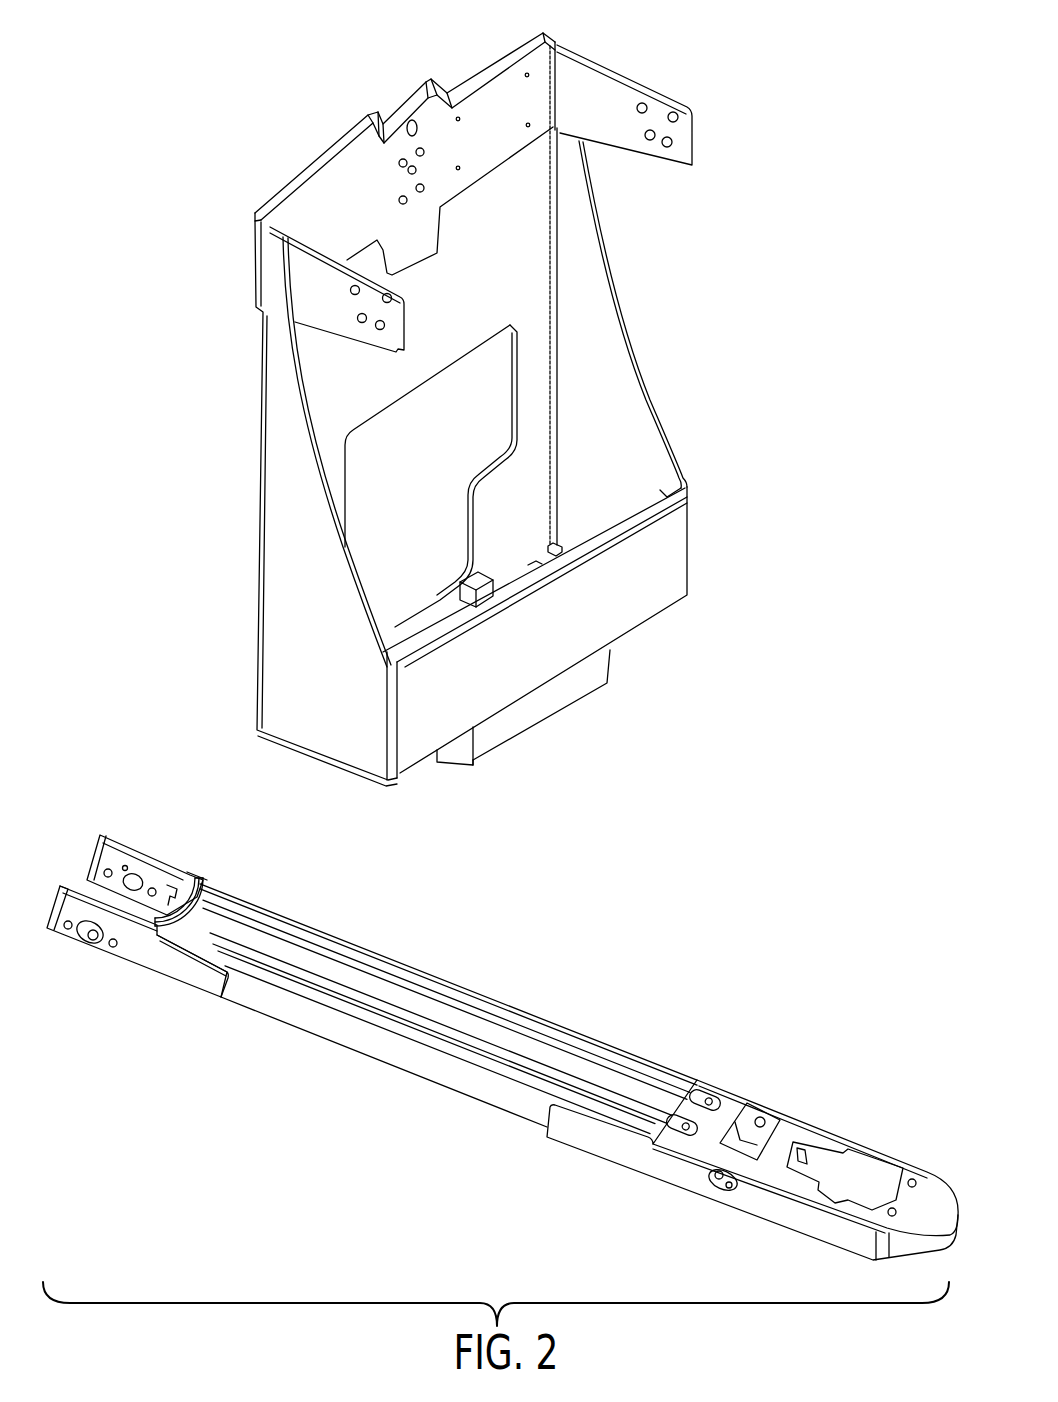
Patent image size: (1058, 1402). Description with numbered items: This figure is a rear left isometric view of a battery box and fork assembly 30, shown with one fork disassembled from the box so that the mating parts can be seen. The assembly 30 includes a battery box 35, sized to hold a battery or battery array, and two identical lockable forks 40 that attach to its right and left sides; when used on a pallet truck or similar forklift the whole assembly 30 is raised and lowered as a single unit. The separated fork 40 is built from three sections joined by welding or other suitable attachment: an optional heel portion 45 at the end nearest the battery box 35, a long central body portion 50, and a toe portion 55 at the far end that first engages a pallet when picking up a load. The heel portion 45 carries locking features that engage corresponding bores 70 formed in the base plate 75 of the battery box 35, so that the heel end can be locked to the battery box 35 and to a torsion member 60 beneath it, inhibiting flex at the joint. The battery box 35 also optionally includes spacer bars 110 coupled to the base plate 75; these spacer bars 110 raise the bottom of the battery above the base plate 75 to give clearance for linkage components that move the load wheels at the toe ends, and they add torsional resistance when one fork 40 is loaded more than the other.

The battery box and fork assembly 30 is at (185, 187).
The battery box 35 is at (688, 548).
The lockable fork 40 is at (502, 1047).
The heel portion 45 is at (147, 960).
The central body portion 50 is at (298, 1010).
The toe portion 55 is at (680, 1170).
The torsion member 60 is at (547, 727).
The bores 70 is at (554, 547).
The base plate 75 is at (533, 565).
The spacer bars 110 is at (487, 594).